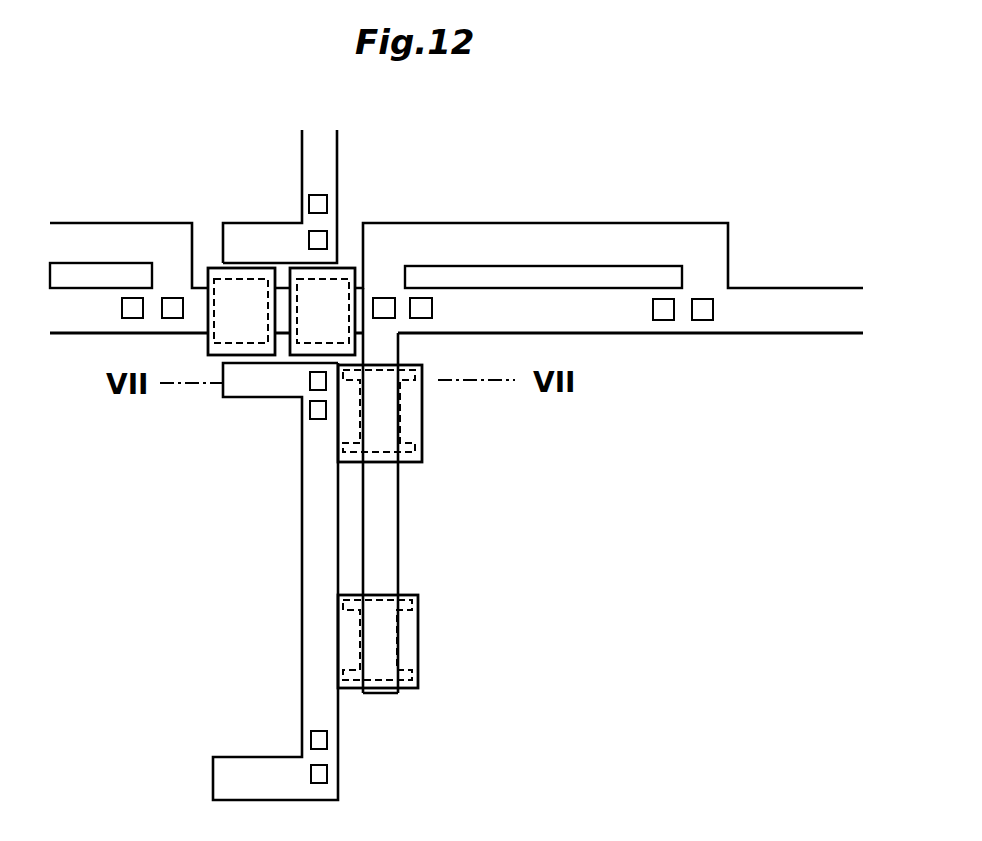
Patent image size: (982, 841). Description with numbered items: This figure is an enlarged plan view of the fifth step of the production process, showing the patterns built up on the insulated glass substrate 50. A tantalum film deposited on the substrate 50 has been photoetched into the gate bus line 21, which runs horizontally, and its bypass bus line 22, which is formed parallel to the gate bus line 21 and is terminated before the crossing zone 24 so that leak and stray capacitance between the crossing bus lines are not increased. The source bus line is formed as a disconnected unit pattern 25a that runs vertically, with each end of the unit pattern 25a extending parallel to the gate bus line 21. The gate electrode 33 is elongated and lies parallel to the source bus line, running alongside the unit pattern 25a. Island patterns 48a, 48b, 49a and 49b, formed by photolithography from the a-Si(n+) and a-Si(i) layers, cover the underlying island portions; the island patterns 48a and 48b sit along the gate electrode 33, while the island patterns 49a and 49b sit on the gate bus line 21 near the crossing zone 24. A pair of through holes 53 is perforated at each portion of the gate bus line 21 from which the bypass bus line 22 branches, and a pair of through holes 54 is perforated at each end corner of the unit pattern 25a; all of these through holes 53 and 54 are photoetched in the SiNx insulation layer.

The gate bus line 21 is at (810, 328).
The bypass bus line 22 is at (538, 222).
The crossing zone 24 is at (363, 222).
The unit pattern 25a is at (302, 557).
The gate electrode 33 is at (400, 563).
The island pattern 48a is at (423, 430).
The island pattern 48b is at (418, 647).
The island pattern 49a is at (303, 267).
The island pattern 49b is at (209, 267).
The insulated glass substrate 50 is at (571, 719).
The through holes 53 is at (386, 312).
The through holes 54 is at (317, 412).